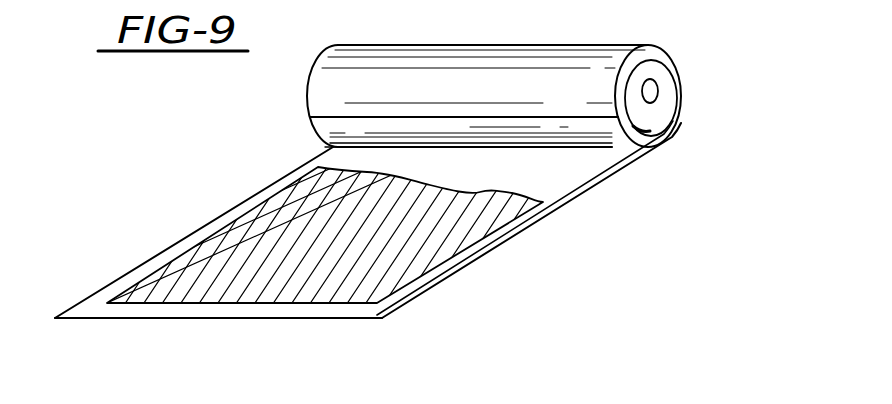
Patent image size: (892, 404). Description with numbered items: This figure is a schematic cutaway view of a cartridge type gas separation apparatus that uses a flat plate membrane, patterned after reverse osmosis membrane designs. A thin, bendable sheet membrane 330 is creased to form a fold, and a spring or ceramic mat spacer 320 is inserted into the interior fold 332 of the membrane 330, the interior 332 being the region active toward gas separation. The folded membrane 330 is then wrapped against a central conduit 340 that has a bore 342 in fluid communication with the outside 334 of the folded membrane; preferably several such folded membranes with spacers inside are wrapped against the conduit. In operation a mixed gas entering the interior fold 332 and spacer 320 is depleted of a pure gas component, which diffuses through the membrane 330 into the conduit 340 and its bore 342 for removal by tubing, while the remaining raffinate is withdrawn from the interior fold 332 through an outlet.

The spacer 320 is at (355, 290).
The sheet membrane 330 is at (622, 118).
The interior fold of the membrane 332 is at (478, 250).
The outside of the folded membrane 334 is at (352, 318).
The central conduit 340 is at (678, 125).
The bore 342 is at (652, 92).